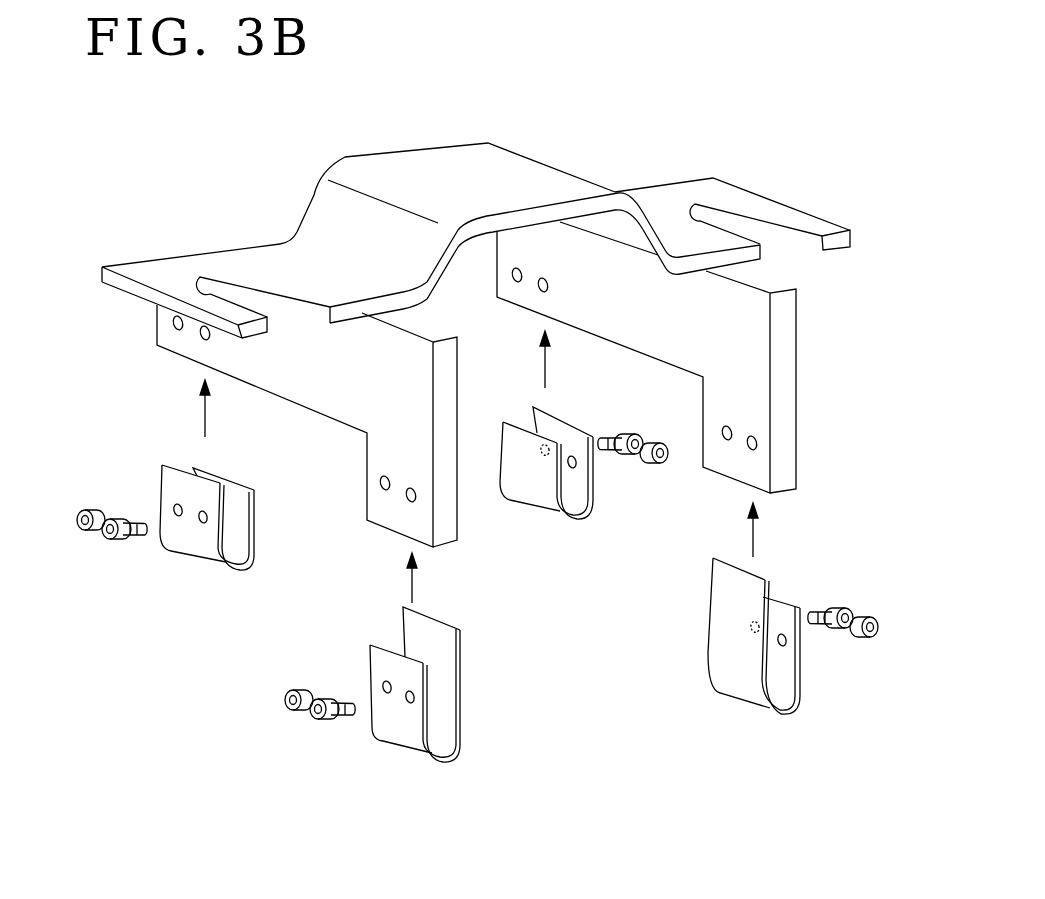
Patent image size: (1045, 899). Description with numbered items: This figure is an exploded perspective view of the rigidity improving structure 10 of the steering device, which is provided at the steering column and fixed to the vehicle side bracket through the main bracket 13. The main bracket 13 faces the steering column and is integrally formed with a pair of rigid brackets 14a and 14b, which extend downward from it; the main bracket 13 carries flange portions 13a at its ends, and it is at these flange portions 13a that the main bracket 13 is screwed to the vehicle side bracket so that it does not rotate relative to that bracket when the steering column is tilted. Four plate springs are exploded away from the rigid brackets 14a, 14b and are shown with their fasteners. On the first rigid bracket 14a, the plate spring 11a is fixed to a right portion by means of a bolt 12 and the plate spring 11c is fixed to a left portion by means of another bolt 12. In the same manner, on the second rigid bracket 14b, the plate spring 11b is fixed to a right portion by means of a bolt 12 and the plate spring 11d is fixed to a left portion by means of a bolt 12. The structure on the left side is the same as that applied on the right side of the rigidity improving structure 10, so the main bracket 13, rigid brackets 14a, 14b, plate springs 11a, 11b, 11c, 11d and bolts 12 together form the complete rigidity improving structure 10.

The rigidity improving structure 10 is at (858, 308).
The plate spring 11a is at (403, 737).
The plate spring 11b is at (743, 690).
The plate spring 11c is at (192, 550).
The plate spring 11d is at (535, 498).
The bolt 12 is at (80, 538).
The main bracket 13 is at (482, 161).
The flange portion 13a is at (145, 270).
The rigid bracket 14a is at (158, 318).
The rigid bracket 14b is at (505, 243).